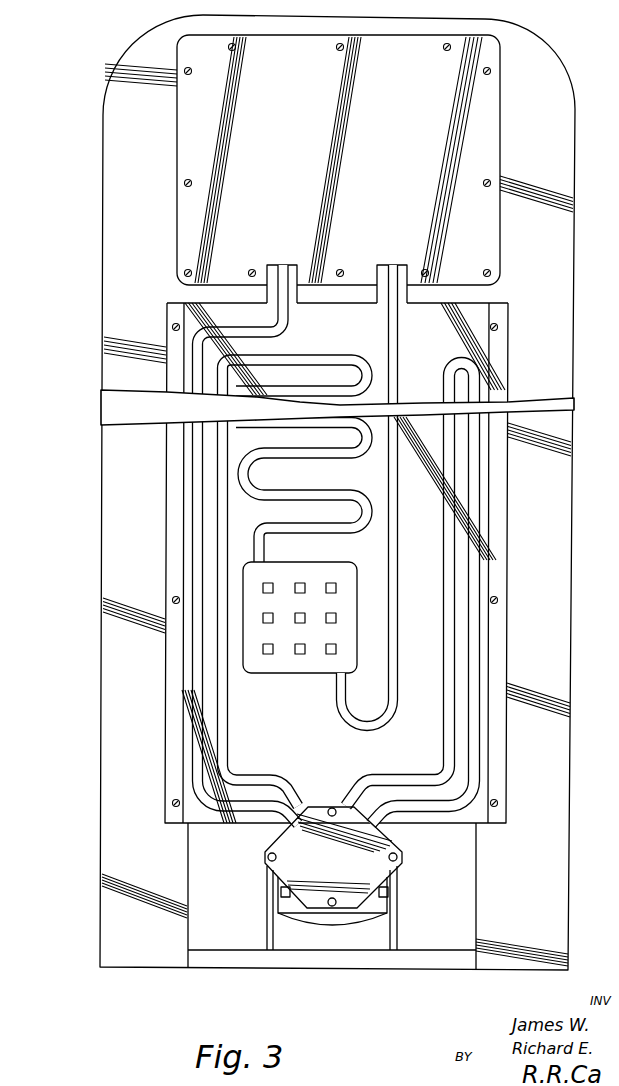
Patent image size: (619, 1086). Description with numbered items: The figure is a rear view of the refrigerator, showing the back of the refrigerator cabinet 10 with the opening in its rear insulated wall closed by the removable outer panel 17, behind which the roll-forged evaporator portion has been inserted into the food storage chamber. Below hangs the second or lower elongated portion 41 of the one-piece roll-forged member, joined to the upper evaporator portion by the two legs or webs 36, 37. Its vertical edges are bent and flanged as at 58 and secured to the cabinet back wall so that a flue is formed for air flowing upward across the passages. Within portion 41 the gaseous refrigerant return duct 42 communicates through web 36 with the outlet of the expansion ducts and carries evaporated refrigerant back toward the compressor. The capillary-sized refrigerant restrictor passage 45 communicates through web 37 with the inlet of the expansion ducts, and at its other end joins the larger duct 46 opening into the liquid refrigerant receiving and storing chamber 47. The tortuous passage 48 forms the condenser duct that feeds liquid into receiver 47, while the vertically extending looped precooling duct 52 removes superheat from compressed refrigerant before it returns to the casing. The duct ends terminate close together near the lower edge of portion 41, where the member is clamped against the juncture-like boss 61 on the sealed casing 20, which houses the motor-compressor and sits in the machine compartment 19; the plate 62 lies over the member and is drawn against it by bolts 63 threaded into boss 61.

The refrigerator cabinet 10 is at (103, 122).
The outer panel 17 is at (463, 168).
The machine compartment 19 is at (447, 919).
The sealed casing 20 is at (330, 921).
The leg or web 36 is at (272, 292).
The leg or web 37 is at (412, 297).
The second or lower elongated portion 41 is at (452, 822).
The gaseous refrigerant return duct 42 is at (283, 283).
The refrigerant restrictor passage 45 is at (393, 281).
The larger duct 46 is at (350, 726).
The liquid refrigerant receiving and storing chamber 47 is at (305, 667).
The tortuous passage 48 is at (222, 530).
The refrigerant superheat removing coil or precooling duct 52 is at (443, 733).
The flange 58 is at (173, 570).
The juncture-like boss 61 is at (375, 910).
The plate 62 is at (292, 863).
The bolts 63 is at (332, 896).